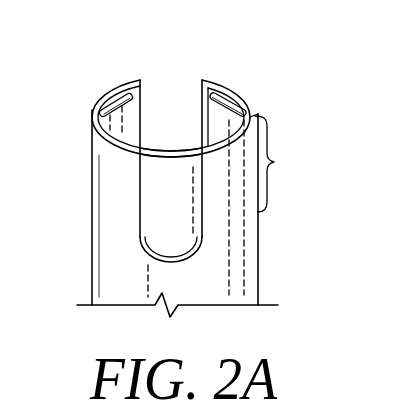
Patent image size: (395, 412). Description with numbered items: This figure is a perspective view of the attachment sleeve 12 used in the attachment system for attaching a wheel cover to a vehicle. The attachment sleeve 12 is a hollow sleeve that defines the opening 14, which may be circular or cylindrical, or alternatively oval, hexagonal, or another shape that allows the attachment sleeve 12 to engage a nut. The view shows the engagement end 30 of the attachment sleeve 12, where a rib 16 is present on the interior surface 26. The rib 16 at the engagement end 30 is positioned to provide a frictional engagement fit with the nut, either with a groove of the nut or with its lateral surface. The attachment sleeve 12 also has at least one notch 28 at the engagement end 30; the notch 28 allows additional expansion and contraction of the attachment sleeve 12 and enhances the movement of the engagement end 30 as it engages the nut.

The attachment sleeve 12 is at (222, 62).
The opening 14 is at (157, 113).
The rib 16 is at (120, 98).
The interior surface 26 is at (107, 133).
The notch 28 is at (150, 235).
The engagement end 30 is at (273, 162).